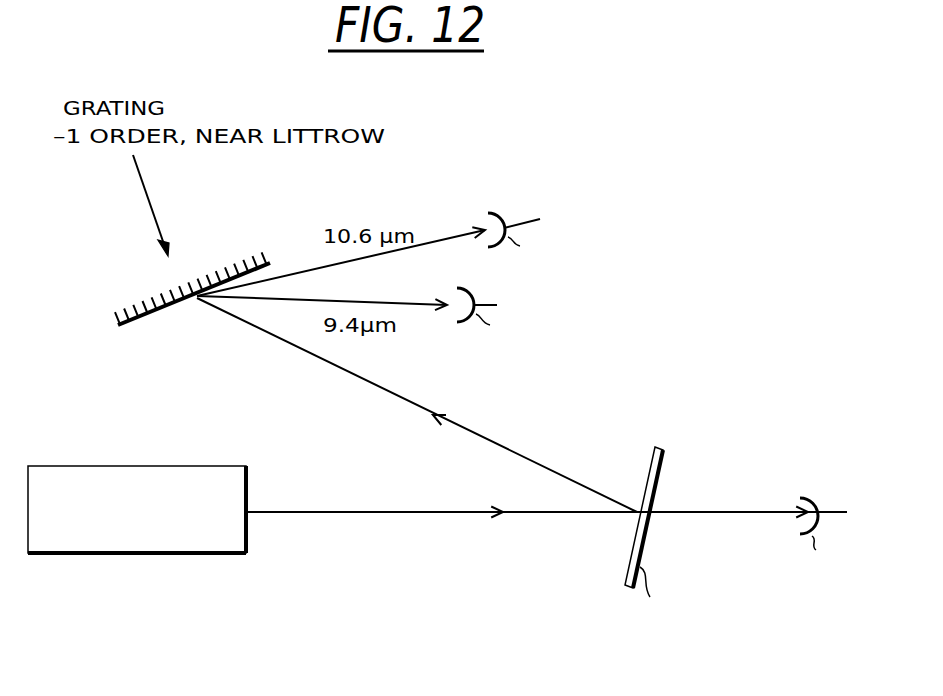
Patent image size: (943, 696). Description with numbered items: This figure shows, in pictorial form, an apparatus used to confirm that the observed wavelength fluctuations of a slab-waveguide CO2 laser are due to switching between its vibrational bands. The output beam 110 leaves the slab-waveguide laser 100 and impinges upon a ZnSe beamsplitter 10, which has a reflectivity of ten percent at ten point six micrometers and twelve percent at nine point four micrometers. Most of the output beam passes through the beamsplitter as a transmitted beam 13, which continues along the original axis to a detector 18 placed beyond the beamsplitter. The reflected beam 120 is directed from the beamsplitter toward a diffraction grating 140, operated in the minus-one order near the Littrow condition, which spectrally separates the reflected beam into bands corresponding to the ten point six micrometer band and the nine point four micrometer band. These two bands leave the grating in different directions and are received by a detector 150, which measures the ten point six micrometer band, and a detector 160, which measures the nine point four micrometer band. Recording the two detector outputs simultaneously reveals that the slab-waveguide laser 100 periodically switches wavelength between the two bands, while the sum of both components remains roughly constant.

The ZnSe beamsplitter 10 is at (665, 463).
The transmitted beam 13 is at (703, 518).
The detector 18 is at (802, 497).
The slab-waveguide laser 100 is at (143, 555).
The output beam 110 is at (347, 513).
The reflected beam 120 is at (534, 463).
The diffraction grating 140 is at (143, 326).
The detector 150 is at (500, 210).
The detector 160 is at (462, 325).